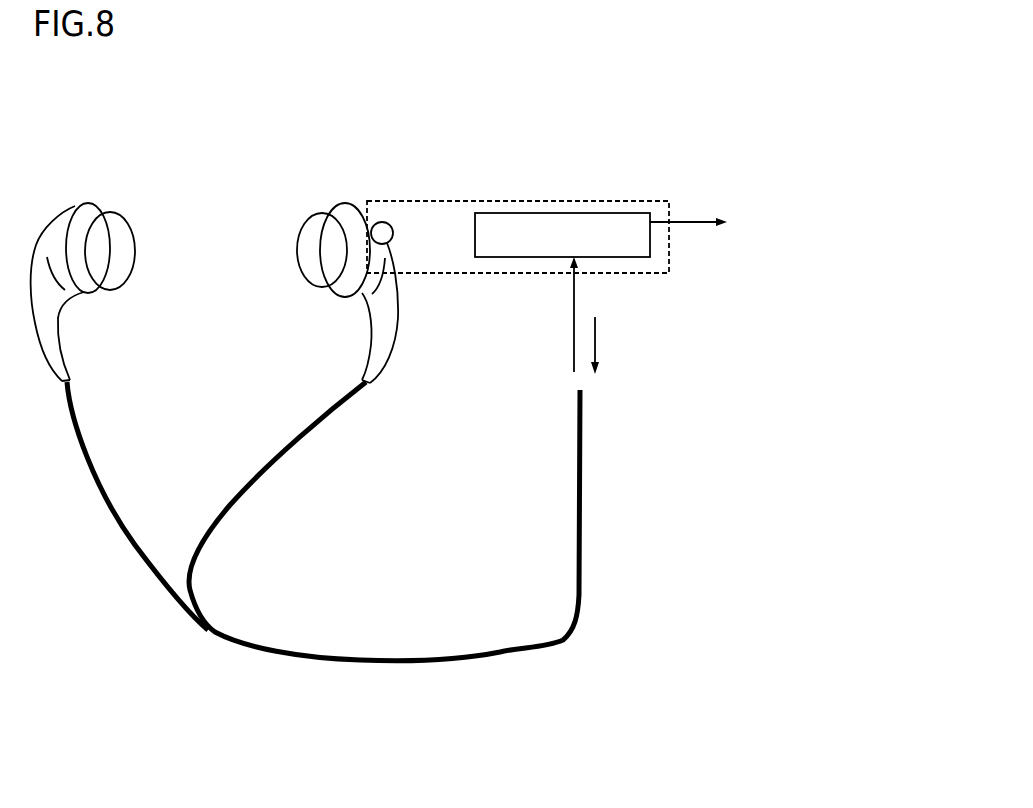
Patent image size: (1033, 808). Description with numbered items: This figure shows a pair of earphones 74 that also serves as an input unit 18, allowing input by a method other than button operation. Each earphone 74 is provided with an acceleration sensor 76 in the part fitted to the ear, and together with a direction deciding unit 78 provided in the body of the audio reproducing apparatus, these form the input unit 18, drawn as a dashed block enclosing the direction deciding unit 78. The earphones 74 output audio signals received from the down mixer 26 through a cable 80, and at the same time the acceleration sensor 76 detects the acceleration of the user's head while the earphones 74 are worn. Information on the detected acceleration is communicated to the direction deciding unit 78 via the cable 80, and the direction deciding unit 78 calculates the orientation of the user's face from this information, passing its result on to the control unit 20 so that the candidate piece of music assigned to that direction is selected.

The earphones 74 is at (322, 213).
The acceleration sensor 76 is at (390, 221).
The direction deciding unit 78 is at (652, 248).
The input unit 18 is at (598, 201).
The cable 80 is at (178, 603).
The control unit 20 is at (765, 223).
The down mixer 26 is at (654, 332).